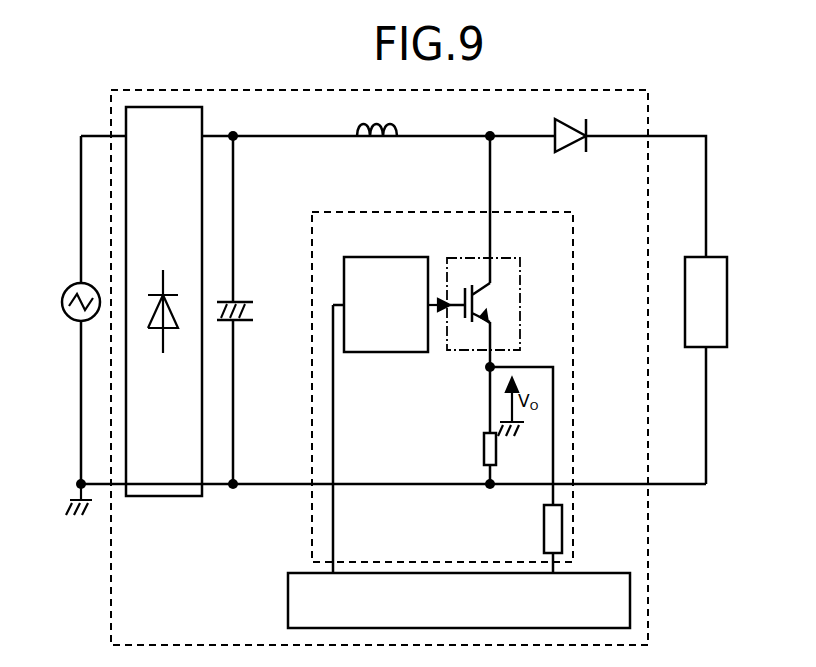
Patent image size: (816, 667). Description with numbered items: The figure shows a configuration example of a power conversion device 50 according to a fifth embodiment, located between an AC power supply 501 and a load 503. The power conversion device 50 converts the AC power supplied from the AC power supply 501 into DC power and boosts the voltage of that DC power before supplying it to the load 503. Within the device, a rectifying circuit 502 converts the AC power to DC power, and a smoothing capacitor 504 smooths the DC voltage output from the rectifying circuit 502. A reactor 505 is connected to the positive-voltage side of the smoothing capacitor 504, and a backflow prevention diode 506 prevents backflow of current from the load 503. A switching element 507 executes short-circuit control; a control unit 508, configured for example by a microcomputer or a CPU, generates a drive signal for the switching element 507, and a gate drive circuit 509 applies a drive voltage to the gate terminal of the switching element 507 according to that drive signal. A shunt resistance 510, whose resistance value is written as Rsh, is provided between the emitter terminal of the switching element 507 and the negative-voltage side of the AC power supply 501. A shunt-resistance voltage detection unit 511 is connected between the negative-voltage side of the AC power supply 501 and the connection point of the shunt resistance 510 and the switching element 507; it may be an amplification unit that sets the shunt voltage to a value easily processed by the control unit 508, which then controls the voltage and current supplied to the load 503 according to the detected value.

The power conversion device 50 is at (648, 557).
The AC power supply 501 is at (70, 290).
The rectifying circuit 502 is at (126, 122).
The load 503 is at (727, 300).
The smoothing capacitor 504 is at (240, 322).
The reactor 505 is at (380, 140).
The backflow prevention diode 506 is at (572, 150).
The switching element 507 is at (453, 290).
The control unit 508 is at (585, 573).
The gate drive circuit 509 is at (383, 257).
The shunt resistance 510 is at (490, 433).
The shunt-resistance voltage detection unit 511 is at (544, 530).